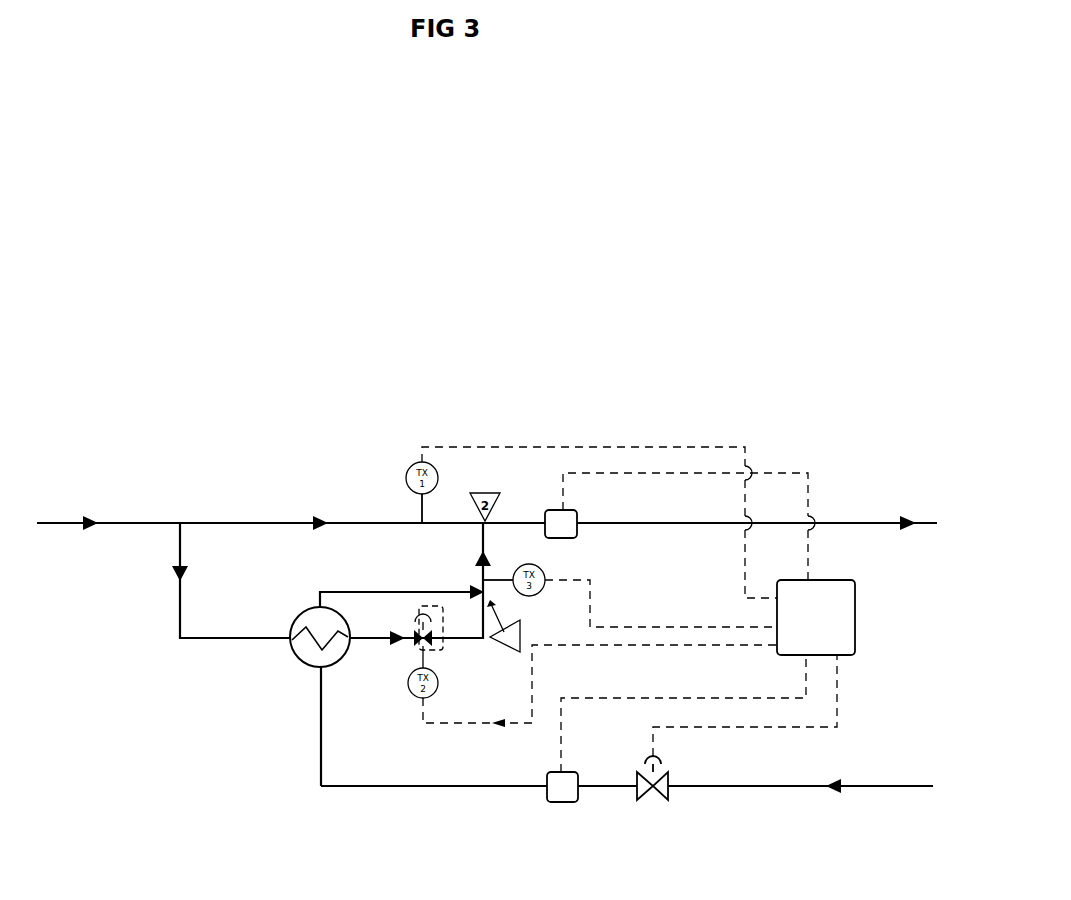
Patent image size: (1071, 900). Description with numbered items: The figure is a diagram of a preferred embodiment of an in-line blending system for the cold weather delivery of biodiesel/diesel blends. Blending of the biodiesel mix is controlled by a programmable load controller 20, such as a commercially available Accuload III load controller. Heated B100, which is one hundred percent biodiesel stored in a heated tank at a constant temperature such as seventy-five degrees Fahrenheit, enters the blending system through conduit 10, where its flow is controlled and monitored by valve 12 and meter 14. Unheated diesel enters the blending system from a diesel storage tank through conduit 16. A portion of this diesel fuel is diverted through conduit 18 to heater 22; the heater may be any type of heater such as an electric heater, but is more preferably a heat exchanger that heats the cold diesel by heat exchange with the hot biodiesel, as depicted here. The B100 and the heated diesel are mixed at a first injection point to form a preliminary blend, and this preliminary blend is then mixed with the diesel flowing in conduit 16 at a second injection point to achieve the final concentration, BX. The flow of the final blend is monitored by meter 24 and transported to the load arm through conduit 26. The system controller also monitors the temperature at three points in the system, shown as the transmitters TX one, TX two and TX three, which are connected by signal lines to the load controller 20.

The conduit 10 is at (760, 786).
The valve 12 is at (642, 800).
The meter 14 is at (560, 802).
The conduit 16 is at (237, 523).
The conduit 18 is at (180, 617).
The programmable load controller 20 is at (856, 614).
The heater 22 is at (293, 667).
The meter 24 is at (548, 508).
The conduit 26 is at (846, 523).